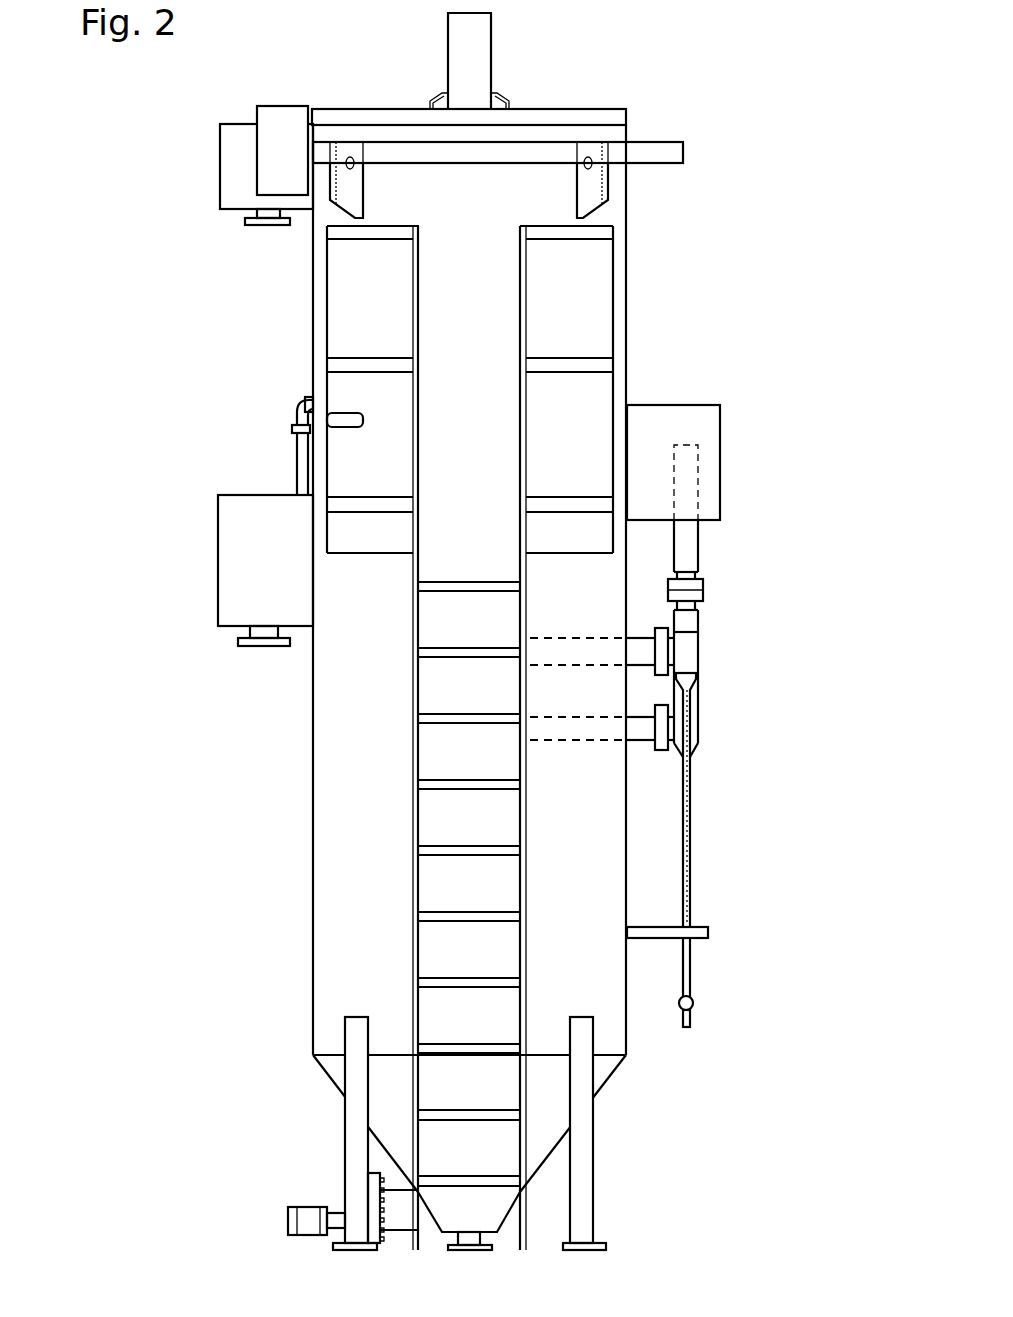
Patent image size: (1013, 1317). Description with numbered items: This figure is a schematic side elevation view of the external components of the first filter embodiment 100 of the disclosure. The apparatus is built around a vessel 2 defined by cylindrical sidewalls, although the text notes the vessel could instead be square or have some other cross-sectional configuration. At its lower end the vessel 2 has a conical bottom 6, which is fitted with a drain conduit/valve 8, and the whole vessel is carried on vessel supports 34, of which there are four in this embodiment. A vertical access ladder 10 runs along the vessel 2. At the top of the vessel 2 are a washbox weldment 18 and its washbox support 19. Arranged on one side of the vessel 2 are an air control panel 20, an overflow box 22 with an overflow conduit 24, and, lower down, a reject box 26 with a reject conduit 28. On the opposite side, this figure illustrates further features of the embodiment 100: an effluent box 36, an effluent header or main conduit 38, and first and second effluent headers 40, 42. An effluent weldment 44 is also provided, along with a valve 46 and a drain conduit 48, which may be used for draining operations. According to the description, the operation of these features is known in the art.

The first filter embodiment 100 is at (700, 88).
The vessel 2 is at (313, 727).
The conical bottom 6 is at (604, 1087).
The drain conduit/valve 8 is at (288, 1220).
The vertical access ladder 10 is at (395, 872).
The washbox weldment 18 is at (491, 32).
The washbox support 19 is at (440, 97).
The air control panel 20 is at (280, 106).
The overflow box 22 is at (220, 165).
The overflow conduit 24 is at (268, 226).
The reject box 26 is at (218, 575).
The reject conduit 28 is at (262, 648).
The vessel supports 34 is at (345, 1135).
The effluent box 36 is at (722, 430).
The effluent header or main conduit 38 is at (699, 545).
The first effluent header 40 is at (699, 625).
The second effluent header 42 is at (640, 742).
The effluent weldment 44 is at (695, 748).
The valve 46 is at (693, 1003).
The drain conduit 48 is at (691, 893).